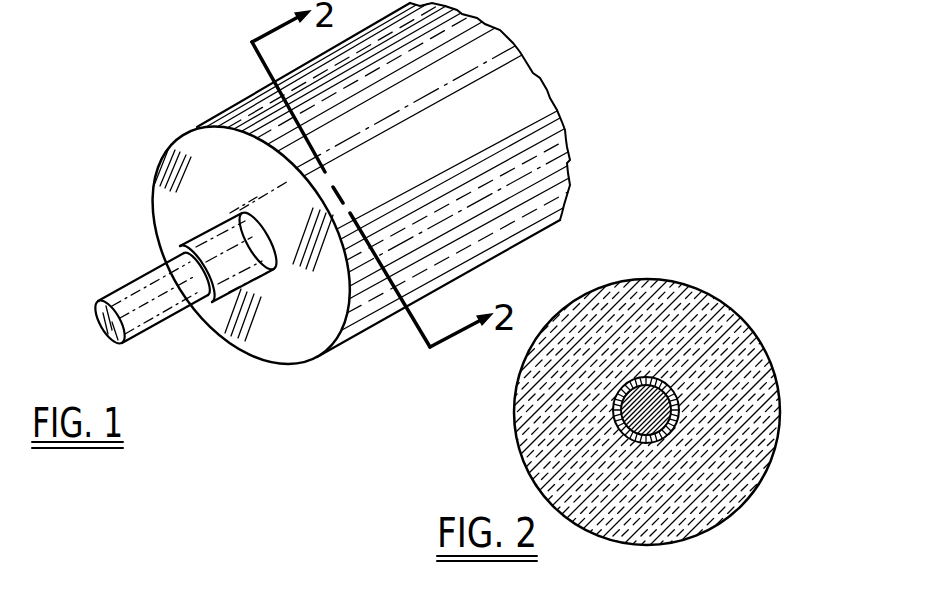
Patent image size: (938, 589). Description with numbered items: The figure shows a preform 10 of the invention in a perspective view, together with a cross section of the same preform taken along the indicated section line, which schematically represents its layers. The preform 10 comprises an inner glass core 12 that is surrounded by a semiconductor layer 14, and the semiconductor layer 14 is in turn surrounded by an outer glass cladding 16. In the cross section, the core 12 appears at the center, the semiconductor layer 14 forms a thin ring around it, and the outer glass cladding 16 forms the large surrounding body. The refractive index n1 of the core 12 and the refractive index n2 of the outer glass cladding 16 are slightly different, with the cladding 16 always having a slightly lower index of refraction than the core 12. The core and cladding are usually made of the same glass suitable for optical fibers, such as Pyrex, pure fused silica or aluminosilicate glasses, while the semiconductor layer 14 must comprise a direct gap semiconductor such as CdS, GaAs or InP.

In FIG. 1, the preform 10 is at (149, 106).
In FIG. 1, the inner glass core 12 is at (133, 283).
In FIG. 2, the inner glass core 12 is at (658, 413).
In FIG. 1, the semiconductor layer 14 is at (200, 238).
In FIG. 2, the semiconductor layer 14 is at (668, 393).
In FIG. 1, the outer glass cladding 16 is at (357, 330).
In FIG. 2, the outer glass cladding 16 is at (710, 295).
In FIG. 1, the refractive index of the core n1 is at (117, 343).
In FIG. 1, the refractive index of the glass cladding n2 is at (258, 348).